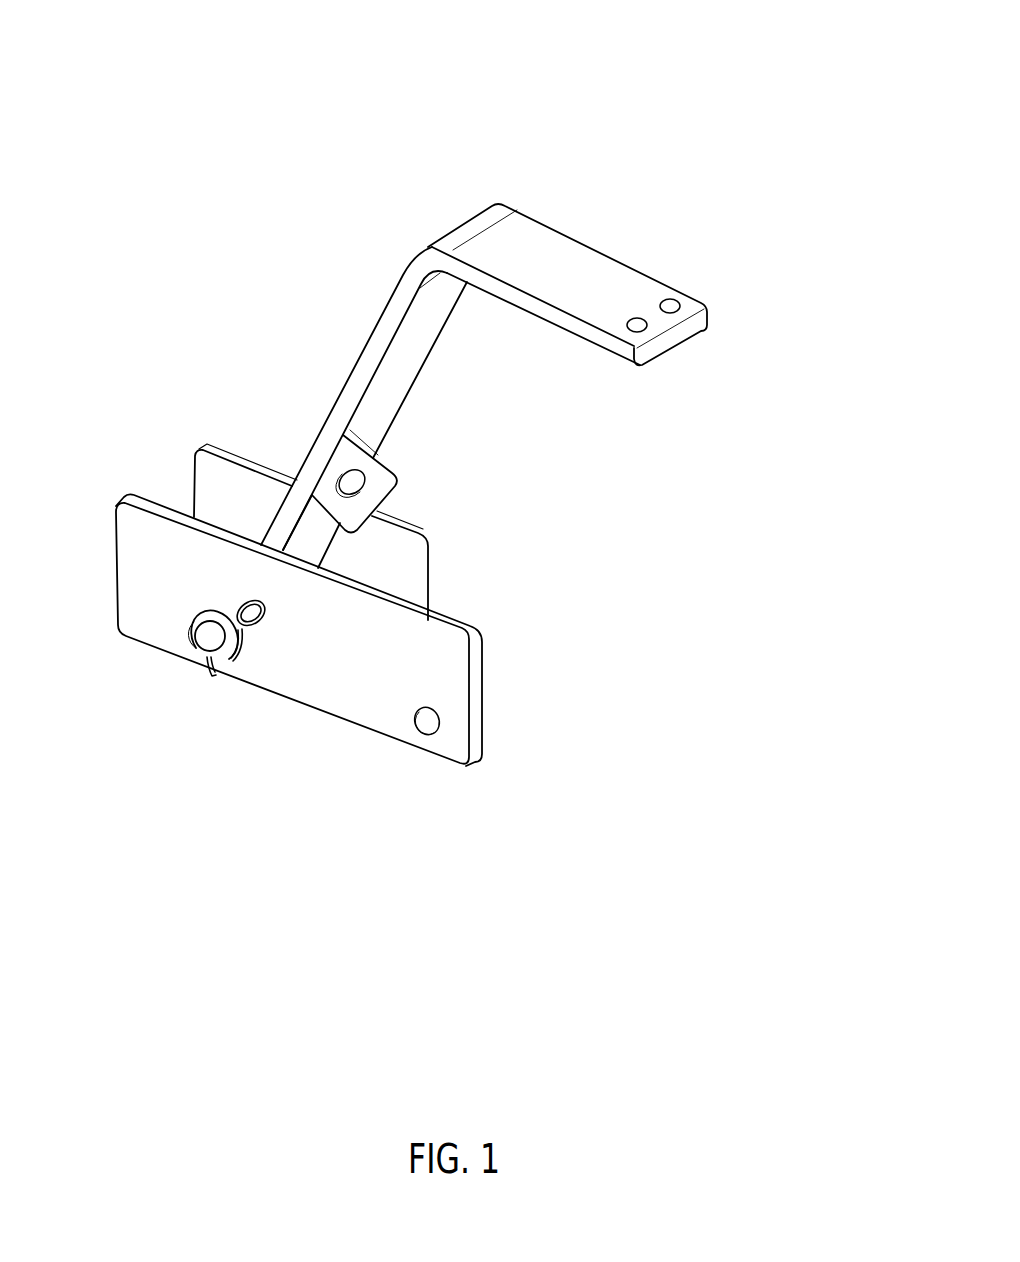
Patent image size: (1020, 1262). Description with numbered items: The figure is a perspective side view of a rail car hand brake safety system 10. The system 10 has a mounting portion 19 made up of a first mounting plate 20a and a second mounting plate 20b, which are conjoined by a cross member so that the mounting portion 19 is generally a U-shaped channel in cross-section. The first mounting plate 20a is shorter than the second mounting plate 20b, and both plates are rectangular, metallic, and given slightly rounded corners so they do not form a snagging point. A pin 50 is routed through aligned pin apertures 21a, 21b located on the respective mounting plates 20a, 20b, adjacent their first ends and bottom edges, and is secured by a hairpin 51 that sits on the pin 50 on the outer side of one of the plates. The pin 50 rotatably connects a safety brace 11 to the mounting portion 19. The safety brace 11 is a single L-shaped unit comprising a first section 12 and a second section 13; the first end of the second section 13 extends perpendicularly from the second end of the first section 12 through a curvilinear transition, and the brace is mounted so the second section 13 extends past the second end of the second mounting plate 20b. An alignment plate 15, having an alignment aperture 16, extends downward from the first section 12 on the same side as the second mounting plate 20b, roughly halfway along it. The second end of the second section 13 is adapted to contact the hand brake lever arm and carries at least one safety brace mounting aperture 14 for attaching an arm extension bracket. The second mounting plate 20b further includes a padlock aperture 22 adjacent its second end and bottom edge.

The rail car hand brake safety system 10 is at (796, 156).
The safety brace 11 is at (384, 296).
The first section 12 is at (355, 362).
The second section 13 is at (655, 277).
The safety brace mounting aperture 14 is at (633, 332).
The alignment plate 15 is at (370, 472).
The alignment aperture 16 is at (412, 537).
The mounting portion 19 is at (229, 449).
The first mounting plate 20a is at (410, 523).
The second mounting plate 20b is at (317, 642).
The pin aperture 21a is at (315, 567).
The pin aperture 21b is at (207, 605).
The padlock aperture 22 is at (425, 736).
The pin 50 is at (207, 641).
The hairpin 51 is at (197, 655).